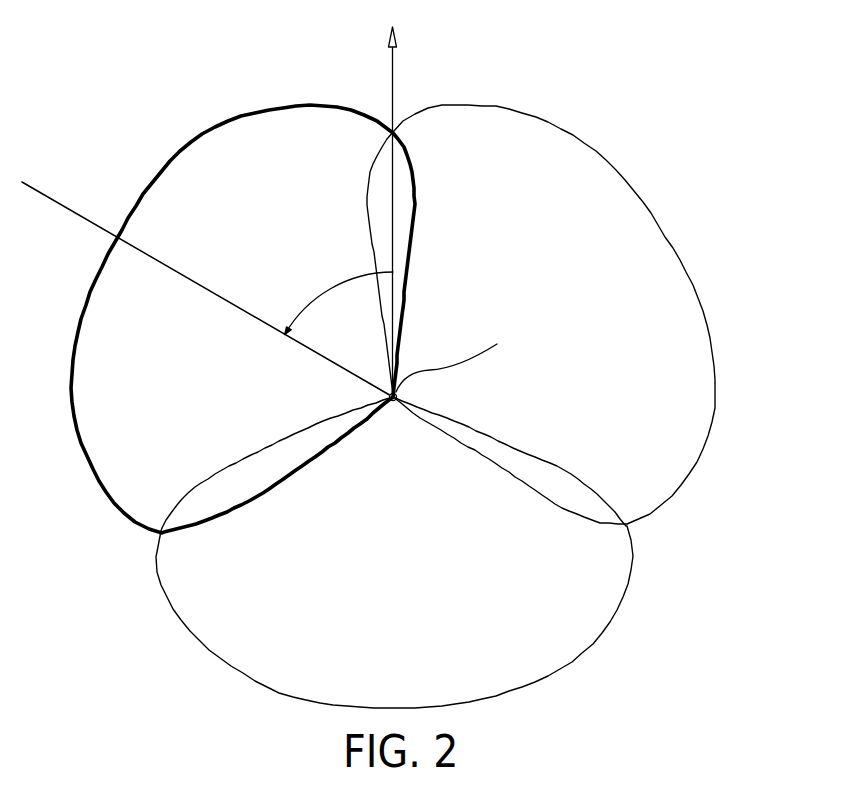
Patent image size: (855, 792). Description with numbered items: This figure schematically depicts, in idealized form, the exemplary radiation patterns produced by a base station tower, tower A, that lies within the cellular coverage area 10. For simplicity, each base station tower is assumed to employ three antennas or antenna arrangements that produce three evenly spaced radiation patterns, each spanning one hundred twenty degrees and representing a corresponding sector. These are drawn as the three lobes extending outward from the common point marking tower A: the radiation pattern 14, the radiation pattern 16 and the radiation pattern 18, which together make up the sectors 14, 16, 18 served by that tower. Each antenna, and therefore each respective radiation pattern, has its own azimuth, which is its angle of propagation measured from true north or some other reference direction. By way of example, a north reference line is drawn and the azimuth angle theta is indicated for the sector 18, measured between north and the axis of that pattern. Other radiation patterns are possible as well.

The cellular coverage area 10 is at (746, 546).
The radiation pattern 14 is at (693, 274).
The radiation pattern 16 is at (530, 683).
The radiation pattern 18 is at (77, 425).